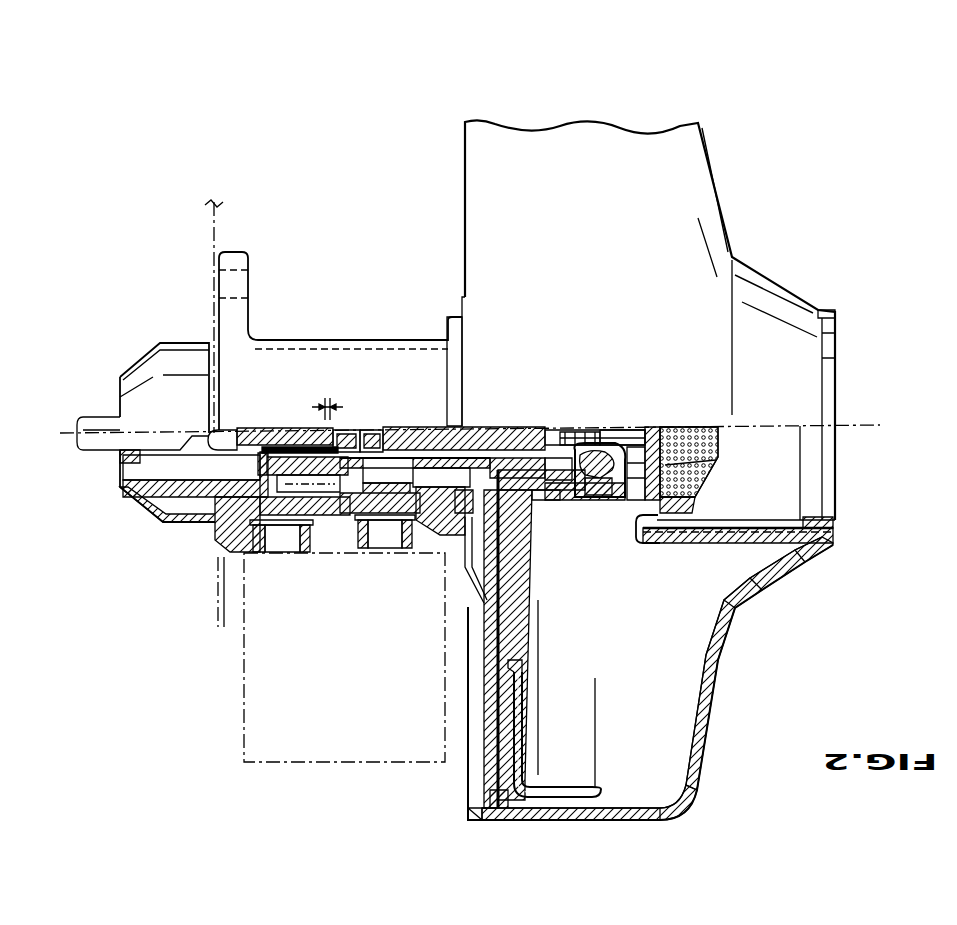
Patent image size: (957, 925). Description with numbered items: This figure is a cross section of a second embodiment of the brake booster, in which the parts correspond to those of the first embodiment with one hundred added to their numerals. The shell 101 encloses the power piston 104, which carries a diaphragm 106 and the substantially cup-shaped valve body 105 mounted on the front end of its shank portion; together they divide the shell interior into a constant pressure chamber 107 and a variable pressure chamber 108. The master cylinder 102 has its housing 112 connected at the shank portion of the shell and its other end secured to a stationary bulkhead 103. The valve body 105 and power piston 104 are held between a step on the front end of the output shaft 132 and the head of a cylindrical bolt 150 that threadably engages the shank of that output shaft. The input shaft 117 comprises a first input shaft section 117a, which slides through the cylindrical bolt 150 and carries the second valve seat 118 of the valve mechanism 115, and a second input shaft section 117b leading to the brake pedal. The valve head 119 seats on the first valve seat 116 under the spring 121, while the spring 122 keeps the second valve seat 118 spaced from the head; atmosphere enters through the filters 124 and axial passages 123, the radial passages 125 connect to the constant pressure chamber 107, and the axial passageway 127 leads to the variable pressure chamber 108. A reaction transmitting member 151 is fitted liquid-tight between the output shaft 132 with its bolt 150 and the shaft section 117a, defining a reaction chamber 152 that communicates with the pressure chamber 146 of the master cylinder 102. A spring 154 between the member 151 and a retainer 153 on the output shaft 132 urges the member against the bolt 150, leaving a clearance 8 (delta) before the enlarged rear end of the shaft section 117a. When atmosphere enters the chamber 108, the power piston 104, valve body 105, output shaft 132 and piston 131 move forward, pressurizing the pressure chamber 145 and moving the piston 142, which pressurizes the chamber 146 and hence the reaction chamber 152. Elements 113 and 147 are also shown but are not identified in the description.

The clearance 8 is at (327, 396).
The shell 101 is at (728, 660).
The master cylinder 102 is at (448, 560).
The stationary bulkhead 103 is at (222, 617).
The power piston 104 is at (539, 657).
The valve body 105 is at (662, 545).
The diaphragm 106 is at (585, 785).
The constant pressure chamber 107 is at (672, 691).
The variable pressure chamber 108 is at (446, 610).
The housing 112 is at (216, 540).
The sleeve 113 is at (340, 470).
The valve mechanism 115 is at (603, 430).
The first valve seat 116 is at (540, 500).
The input shaft 117 is at (235, 433).
The first input shaft section 117a is at (520, 430).
The second input shaft section 117b is at (100, 417).
The second valve seat 118 is at (578, 432).
The valve head 119 is at (600, 497).
The spring 121 is at (636, 500).
The spring 122 is at (652, 427).
The axial passages 123 is at (692, 487).
The filters 124 is at (680, 427).
The radial passages 125 is at (675, 477).
The axial passageway 127 is at (520, 500).
The piston 131 is at (282, 552).
The output shaft 132 is at (425, 428).
The piston 142 is at (390, 552).
The pressure chamber 145 is at (322, 514).
The pressure chamber 146 is at (480, 430).
The member 147 is at (244, 700).
The cylindrical bolt 150 is at (552, 452).
The reaction transmitting member 151 is at (340, 430).
The reaction chamber 152 is at (375, 430).
The retainer 153 is at (258, 466).
The spring 154 is at (268, 447).